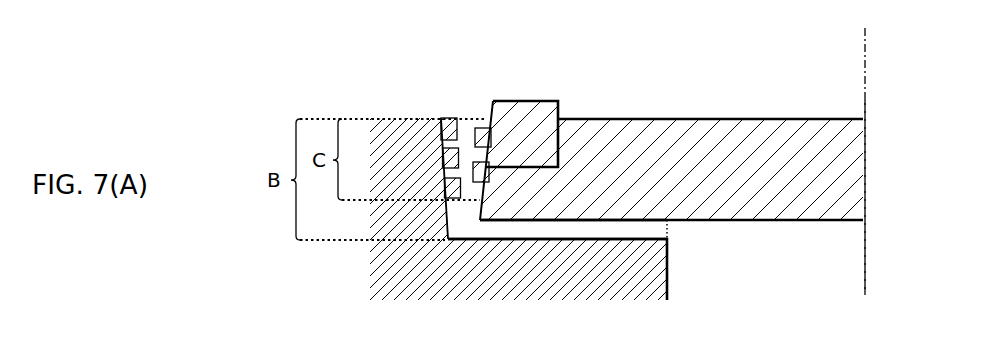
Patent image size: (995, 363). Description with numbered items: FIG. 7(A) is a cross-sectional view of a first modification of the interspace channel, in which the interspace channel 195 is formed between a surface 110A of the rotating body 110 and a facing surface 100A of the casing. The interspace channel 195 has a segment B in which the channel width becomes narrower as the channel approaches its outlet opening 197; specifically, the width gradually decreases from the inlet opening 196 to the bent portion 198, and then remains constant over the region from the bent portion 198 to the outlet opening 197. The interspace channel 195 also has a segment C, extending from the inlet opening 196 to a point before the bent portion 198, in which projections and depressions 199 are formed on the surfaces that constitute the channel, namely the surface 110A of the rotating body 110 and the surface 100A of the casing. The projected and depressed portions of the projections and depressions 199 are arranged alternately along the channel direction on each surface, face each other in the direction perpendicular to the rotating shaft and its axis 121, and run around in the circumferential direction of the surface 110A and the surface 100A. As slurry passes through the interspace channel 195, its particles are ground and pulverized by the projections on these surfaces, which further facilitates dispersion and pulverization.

The surface of the casing 100A is at (447, 223).
The rotating body 110 is at (657, 120).
The surface of the rotating body 110A is at (485, 188).
The axis 121 is at (865, 88).
The interspace channel 195 is at (467, 113).
The inlet opening 196 is at (486, 117).
The outlet opening 197 is at (667, 222).
The bent portion 198 is at (475, 230).
The projections and depressions 199 is at (446, 117).